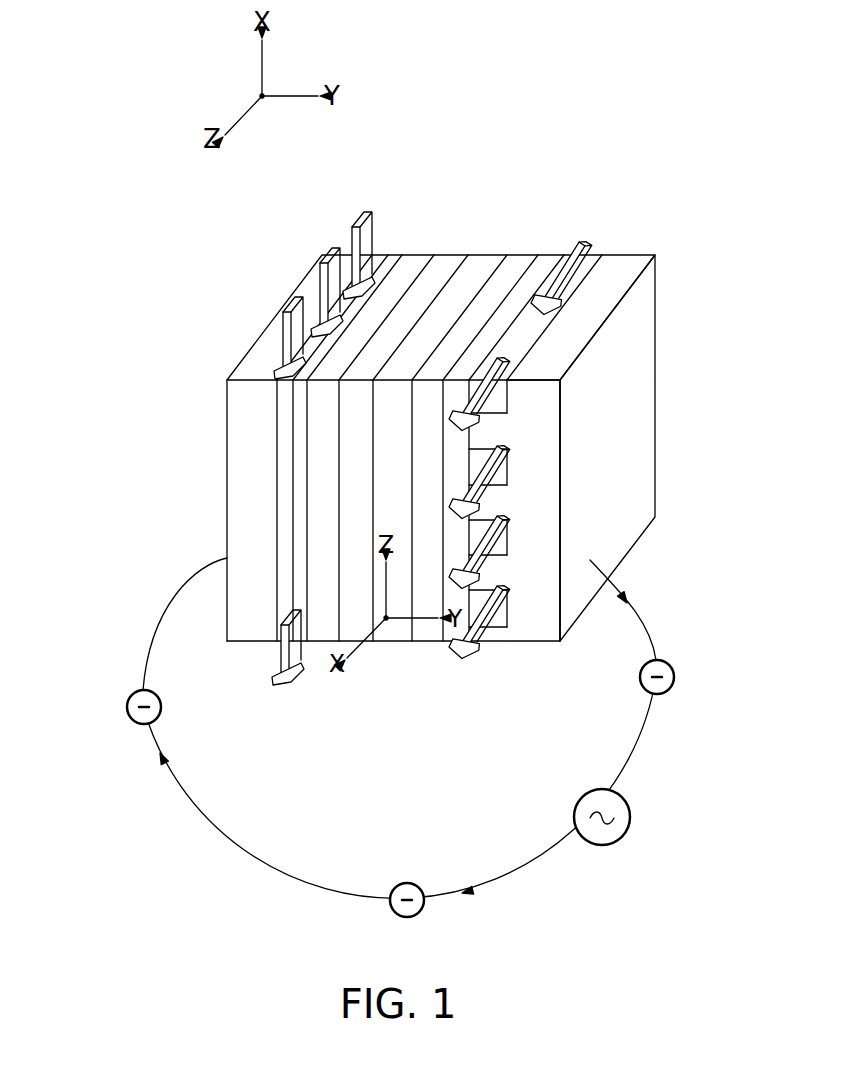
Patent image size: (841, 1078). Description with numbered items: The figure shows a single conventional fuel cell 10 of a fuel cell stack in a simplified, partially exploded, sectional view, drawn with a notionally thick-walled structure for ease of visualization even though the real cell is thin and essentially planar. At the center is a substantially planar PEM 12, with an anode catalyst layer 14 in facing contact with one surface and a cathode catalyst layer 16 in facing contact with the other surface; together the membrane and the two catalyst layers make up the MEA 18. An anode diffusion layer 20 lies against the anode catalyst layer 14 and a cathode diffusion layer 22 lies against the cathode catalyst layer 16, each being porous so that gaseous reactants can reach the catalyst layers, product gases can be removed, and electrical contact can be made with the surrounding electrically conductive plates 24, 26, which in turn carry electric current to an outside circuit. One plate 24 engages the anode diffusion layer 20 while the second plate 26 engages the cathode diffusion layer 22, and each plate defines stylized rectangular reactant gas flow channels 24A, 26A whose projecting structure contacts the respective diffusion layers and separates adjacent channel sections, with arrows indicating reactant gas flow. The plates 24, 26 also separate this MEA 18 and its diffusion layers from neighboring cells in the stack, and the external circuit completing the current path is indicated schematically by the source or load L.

The fuel cell 10 is at (140, 269).
The PEM 12 is at (395, 644).
The anode catalyst layer 14 is at (350, 644).
The cathode catalyst layer 16 is at (425, 644).
The MEA 18 is at (462, 714).
The anode diffusion layer 20 is at (425, 255).
The cathode diffusion layer 22 is at (548, 255).
The plate 24 is at (262, 360).
The reactant gas flow channel 24A is at (374, 236).
The plate 26 is at (648, 255).
The reactant gas flow channel 26A is at (600, 236).
The load / power source L is at (630, 820).